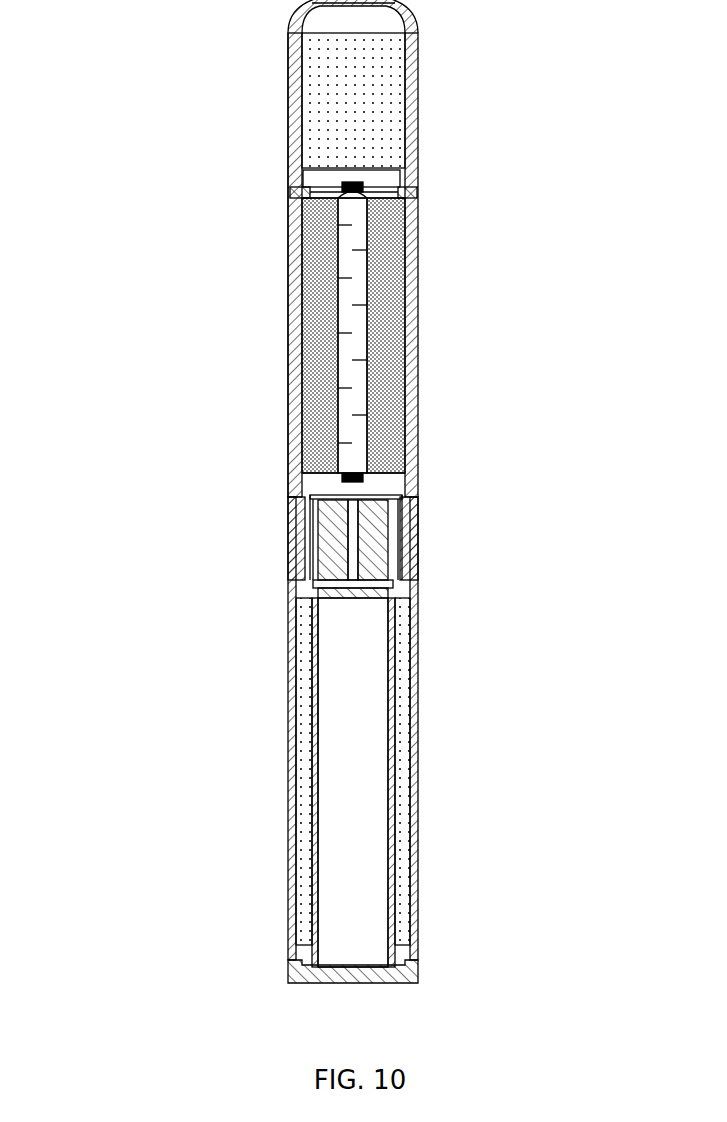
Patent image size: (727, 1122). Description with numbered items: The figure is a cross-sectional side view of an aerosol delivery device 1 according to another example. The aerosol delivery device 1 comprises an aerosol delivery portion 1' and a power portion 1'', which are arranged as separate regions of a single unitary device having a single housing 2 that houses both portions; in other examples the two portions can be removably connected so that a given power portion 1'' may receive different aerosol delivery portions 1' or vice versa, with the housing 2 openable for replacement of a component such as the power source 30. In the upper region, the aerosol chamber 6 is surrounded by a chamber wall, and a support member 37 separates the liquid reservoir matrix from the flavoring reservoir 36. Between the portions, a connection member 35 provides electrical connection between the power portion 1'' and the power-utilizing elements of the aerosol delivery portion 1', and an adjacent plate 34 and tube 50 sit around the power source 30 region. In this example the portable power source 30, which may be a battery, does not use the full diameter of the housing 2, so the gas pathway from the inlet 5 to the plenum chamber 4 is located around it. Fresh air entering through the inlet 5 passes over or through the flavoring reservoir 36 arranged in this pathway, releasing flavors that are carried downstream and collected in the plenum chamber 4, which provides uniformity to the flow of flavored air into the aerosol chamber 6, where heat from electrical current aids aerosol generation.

The aerosol delivery device 1 is at (176, 496).
The aerosol delivery portion 1' is at (482, 265).
The power portion 1'' is at (486, 740).
The housing 2 is at (420, 80).
The plenum chamber 4 is at (402, 483).
The inlet 5 is at (415, 962).
The aerosol chamber 6 is at (352, 345).
The power source 30 is at (330, 785).
The support plate 34 is at (392, 583).
The connection member 35 is at (384, 528).
The flavoring reservoir 36 is at (416, 686).
The support member 37 is at (292, 362).
The tube 50 is at (400, 743).